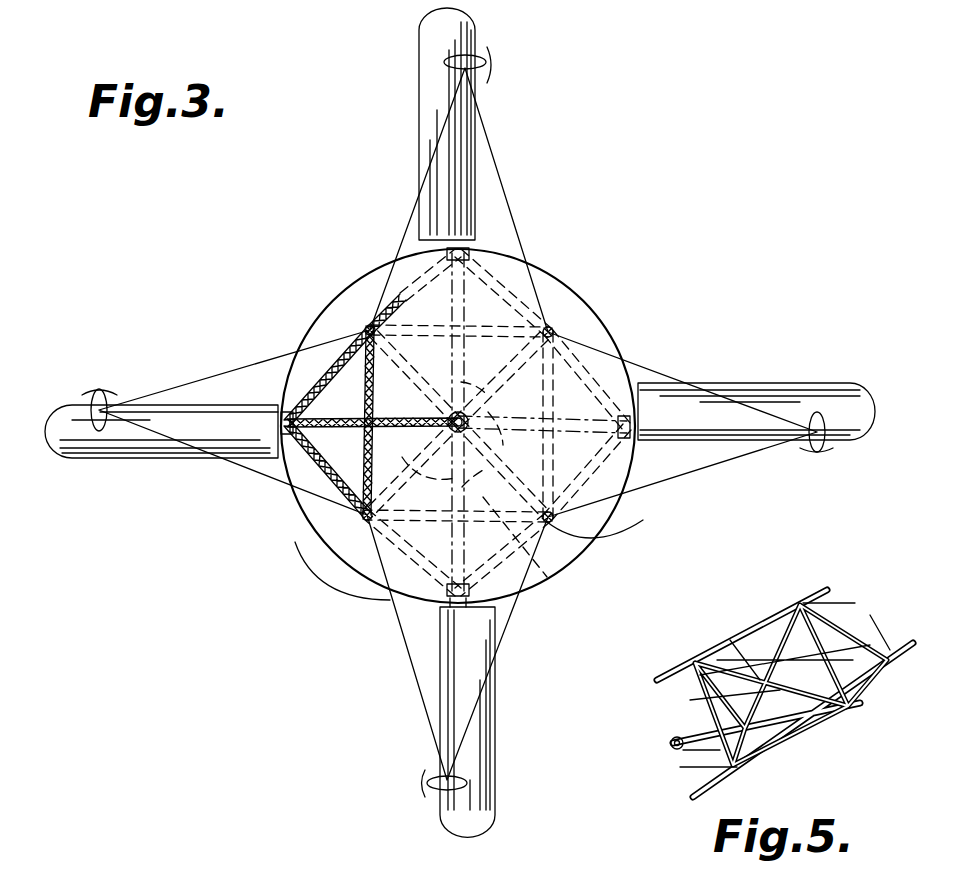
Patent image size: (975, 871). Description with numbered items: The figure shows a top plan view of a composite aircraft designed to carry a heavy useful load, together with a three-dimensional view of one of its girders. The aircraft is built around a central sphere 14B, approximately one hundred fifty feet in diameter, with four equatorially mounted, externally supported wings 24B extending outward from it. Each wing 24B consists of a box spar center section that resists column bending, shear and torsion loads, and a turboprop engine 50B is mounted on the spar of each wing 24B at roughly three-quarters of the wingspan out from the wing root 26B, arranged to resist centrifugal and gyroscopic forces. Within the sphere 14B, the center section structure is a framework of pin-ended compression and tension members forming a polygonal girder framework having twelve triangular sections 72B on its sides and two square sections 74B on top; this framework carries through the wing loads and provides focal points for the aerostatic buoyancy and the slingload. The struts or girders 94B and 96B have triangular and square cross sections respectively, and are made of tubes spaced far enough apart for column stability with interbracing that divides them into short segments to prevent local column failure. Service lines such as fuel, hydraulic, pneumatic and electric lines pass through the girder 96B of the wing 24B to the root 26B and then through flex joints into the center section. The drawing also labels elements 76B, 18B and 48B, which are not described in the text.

In FIG. 3, the central sphere 14B is at (602, 303).
In FIG. 3, the wing 24B is at (432, 92).
In FIG. 3, the turboprop engine 50B is at (440, 780).
In FIG. 3, the wing root 26B is at (637, 430).
In FIG. 3, the strut or girder 94B is at (395, 303).
In FIG. 5, the strut or girder 94B is at (733, 628).
In FIG. 3, the hub 76B is at (448, 420).
In FIG. 3, the central bearing 18B is at (446, 394).
In FIG. 3, the strut or girder 96B is at (505, 445).
In FIG. 3, the square section 74B is at (533, 557).
In FIG. 3, the cable stay 48B is at (330, 503).
In FIG. 3, the triangular section 72B is at (433, 862).